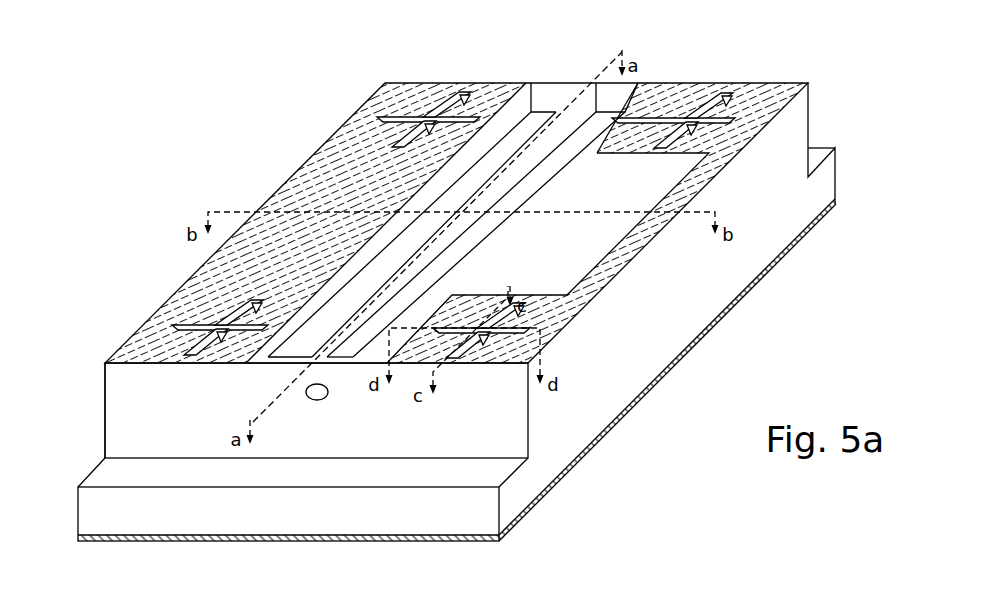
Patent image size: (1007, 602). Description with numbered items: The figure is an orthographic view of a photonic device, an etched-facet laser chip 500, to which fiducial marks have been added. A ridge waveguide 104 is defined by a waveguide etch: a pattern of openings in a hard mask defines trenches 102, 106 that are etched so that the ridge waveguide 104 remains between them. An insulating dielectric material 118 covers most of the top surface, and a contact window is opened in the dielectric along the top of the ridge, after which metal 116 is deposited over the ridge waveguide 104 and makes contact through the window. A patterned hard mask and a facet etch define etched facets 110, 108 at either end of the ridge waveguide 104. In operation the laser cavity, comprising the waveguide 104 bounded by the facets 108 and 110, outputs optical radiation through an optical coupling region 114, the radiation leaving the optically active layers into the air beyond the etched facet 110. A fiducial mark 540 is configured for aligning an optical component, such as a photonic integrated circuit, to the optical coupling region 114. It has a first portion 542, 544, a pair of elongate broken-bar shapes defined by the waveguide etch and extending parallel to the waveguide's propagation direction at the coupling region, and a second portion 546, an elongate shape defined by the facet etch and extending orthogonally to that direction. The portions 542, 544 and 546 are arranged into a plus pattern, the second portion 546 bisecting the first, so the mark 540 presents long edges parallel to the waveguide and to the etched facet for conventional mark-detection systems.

The etched-facet laser chip 500 is at (183, 158).
The trench 102 is at (500, 138).
The ridge waveguide 104 is at (584, 90).
The trench 106 is at (586, 126).
The etched facet 108 is at (820, 88).
The etched facet 110 is at (118, 400).
The optical coupling region 114 is at (330, 394).
The metal 116 is at (597, 223).
The insulating dielectric material 118 is at (315, 222).
The fiducial mark 540 is at (537, 318).
The first portion of the fiducial mark 542 is at (473, 332).
The first portion of the fiducial mark 544 is at (535, 323).
The second portion of the fiducial mark 546 is at (528, 330).